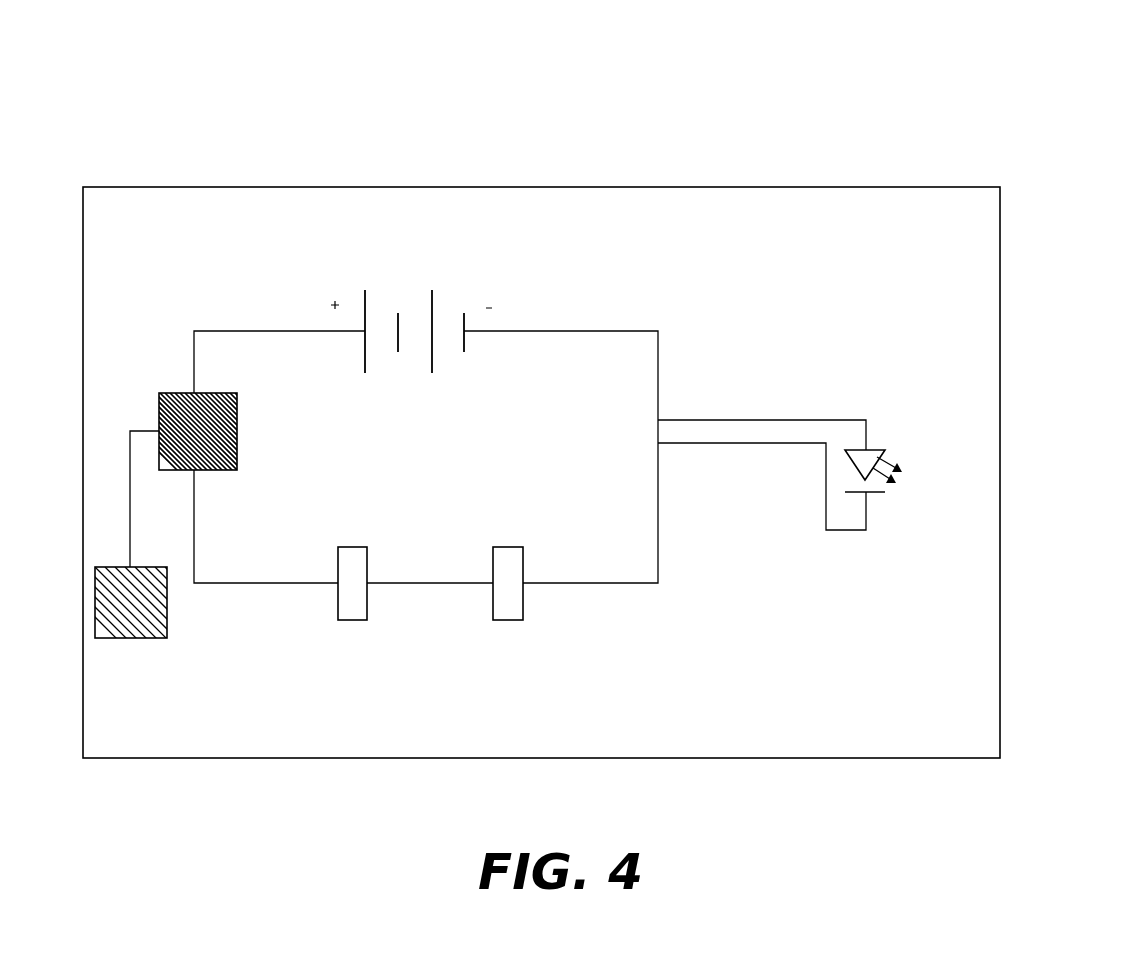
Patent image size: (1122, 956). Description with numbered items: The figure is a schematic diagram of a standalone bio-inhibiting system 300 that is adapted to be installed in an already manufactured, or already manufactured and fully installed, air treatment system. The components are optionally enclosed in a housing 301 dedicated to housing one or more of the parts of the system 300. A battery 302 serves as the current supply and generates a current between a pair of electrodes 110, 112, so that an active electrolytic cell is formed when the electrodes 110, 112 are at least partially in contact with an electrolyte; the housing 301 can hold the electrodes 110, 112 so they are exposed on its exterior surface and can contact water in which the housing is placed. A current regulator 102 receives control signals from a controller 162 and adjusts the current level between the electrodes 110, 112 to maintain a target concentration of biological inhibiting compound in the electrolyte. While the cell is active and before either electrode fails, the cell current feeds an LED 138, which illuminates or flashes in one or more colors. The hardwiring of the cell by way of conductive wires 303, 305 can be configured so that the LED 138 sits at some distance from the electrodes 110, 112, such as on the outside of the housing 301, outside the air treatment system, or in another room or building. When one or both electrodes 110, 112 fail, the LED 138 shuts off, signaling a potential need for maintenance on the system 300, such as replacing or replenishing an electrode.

The bio-inhibiting system 300 is at (1068, 142).
The housing 301 is at (1000, 268).
The battery 302 is at (458, 267).
The current regulator 102 is at (176, 392).
The controller 162 is at (139, 640).
The electrode 110 is at (338, 597).
The electrode 112 is at (523, 594).
The conductive wire 303 is at (762, 420).
The conductive wire 305 is at (753, 445).
The LED 138 is at (890, 430).